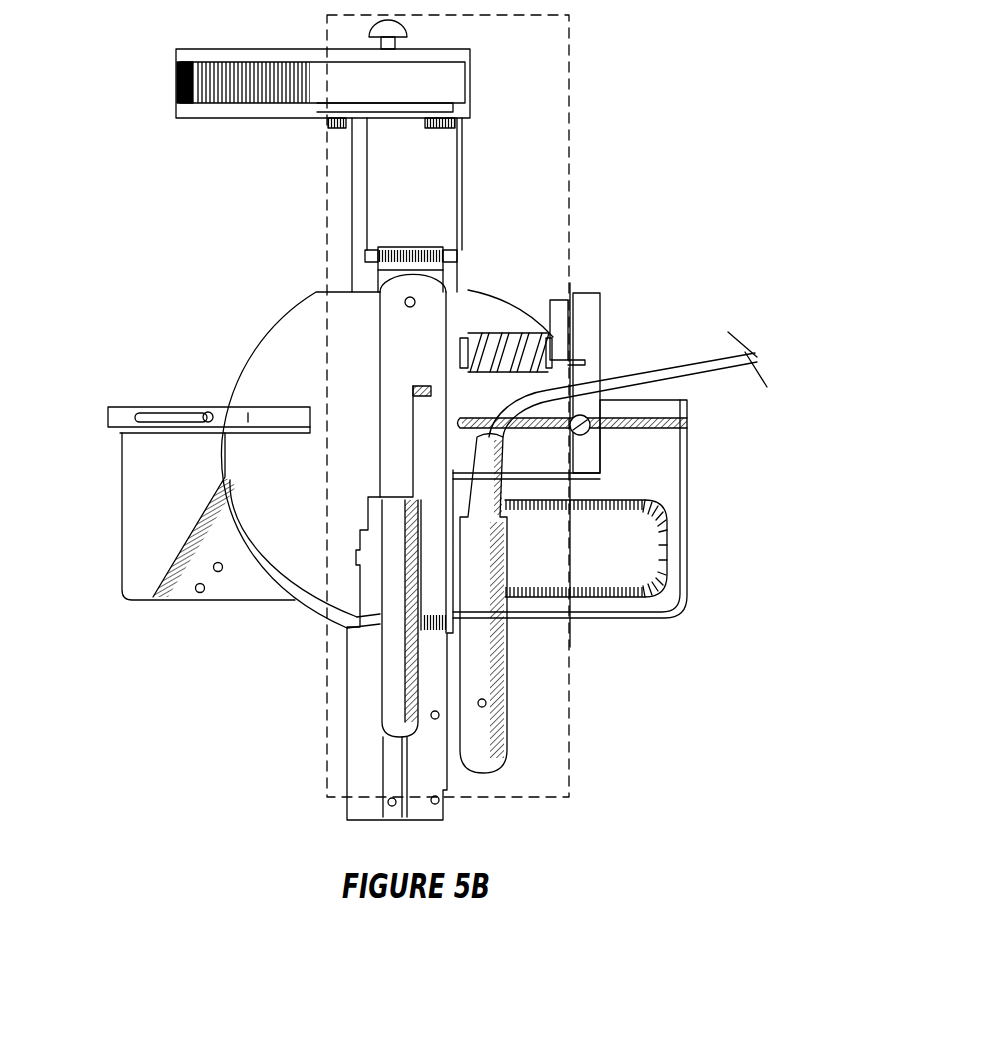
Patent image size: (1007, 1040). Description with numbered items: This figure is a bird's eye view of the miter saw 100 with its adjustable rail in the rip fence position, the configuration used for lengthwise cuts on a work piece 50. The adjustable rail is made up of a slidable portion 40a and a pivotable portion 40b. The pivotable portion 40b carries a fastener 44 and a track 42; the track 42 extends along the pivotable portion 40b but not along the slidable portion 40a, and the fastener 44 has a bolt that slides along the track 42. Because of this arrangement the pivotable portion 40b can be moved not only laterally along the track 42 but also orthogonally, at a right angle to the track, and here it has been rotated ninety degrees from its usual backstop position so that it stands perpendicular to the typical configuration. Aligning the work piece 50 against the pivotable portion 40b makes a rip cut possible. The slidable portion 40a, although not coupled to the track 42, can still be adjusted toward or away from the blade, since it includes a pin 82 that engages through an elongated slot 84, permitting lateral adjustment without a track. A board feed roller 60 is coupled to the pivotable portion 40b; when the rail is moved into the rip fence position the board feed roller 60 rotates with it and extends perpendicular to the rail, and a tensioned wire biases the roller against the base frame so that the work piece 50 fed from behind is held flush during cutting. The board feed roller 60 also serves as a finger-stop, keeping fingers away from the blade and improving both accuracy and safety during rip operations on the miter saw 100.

The miter saw 100 is at (740, 71).
The work piece 50 is at (573, 198).
The slidable portion 40a is at (120, 412).
The pivotable portion 40b is at (588, 323).
The pin 82 is at (207, 413).
The elongated slot 84 is at (140, 408).
The board feed roller 60 is at (465, 345).
The track 42 is at (690, 426).
The fastener 44 is at (591, 433).